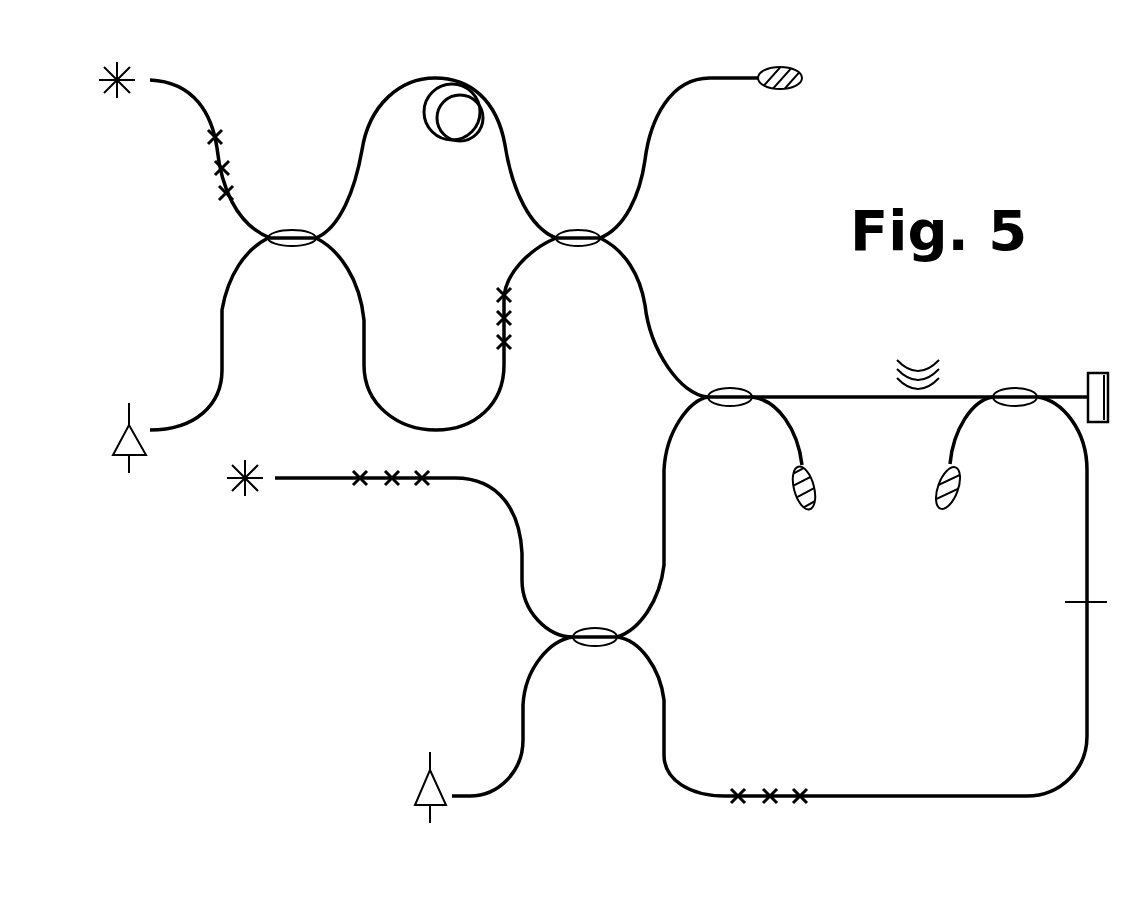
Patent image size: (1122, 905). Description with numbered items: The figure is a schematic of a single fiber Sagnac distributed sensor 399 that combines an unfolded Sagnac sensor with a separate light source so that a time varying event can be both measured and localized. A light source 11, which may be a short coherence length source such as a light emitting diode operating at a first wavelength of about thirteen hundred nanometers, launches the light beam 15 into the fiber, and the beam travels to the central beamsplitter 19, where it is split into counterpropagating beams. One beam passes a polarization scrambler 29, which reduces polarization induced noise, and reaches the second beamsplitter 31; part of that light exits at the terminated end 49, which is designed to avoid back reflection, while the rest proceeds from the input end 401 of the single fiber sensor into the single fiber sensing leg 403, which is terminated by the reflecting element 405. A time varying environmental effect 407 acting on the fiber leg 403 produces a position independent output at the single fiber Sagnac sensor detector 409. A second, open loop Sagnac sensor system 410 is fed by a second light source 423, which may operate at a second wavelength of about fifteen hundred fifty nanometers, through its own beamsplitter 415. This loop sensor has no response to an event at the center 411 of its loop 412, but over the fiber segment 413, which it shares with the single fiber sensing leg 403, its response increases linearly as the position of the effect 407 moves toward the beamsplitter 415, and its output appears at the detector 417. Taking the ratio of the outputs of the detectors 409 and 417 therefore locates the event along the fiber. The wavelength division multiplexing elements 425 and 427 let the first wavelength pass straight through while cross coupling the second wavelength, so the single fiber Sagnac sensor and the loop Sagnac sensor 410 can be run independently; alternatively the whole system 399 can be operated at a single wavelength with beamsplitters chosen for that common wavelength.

The light source 11 is at (113, 98).
The light beam 15 is at (224, 167).
The central beamsplitter 19 is at (287, 247).
The polarization scrambler 29 is at (510, 320).
The second beamsplitter 31 is at (568, 248).
The terminated end 49 is at (782, 90).
The single fiber Sagnac distributed sensor 399 is at (217, 220).
The input end 401 is at (572, 130).
The single fiber sensing leg 403 is at (775, 397).
The reflecting element 405 is at (1088, 380).
The time varying environmental effect 407 is at (917, 375).
The single fiber Sagnac sensor detector 409 is at (137, 455).
The open loop Sagnac sensor system 410 is at (417, 818).
The center of loop 411 is at (1085, 605).
The loop 412 is at (898, 795).
The fiber segment 413 is at (870, 397).
The beamsplitter 415 is at (590, 647).
The detector 417 is at (422, 797).
The light source 423 is at (250, 490).
The wavelength division multiplexing element 425 is at (740, 408).
The wavelength division multiplexing element 427 is at (1013, 408).